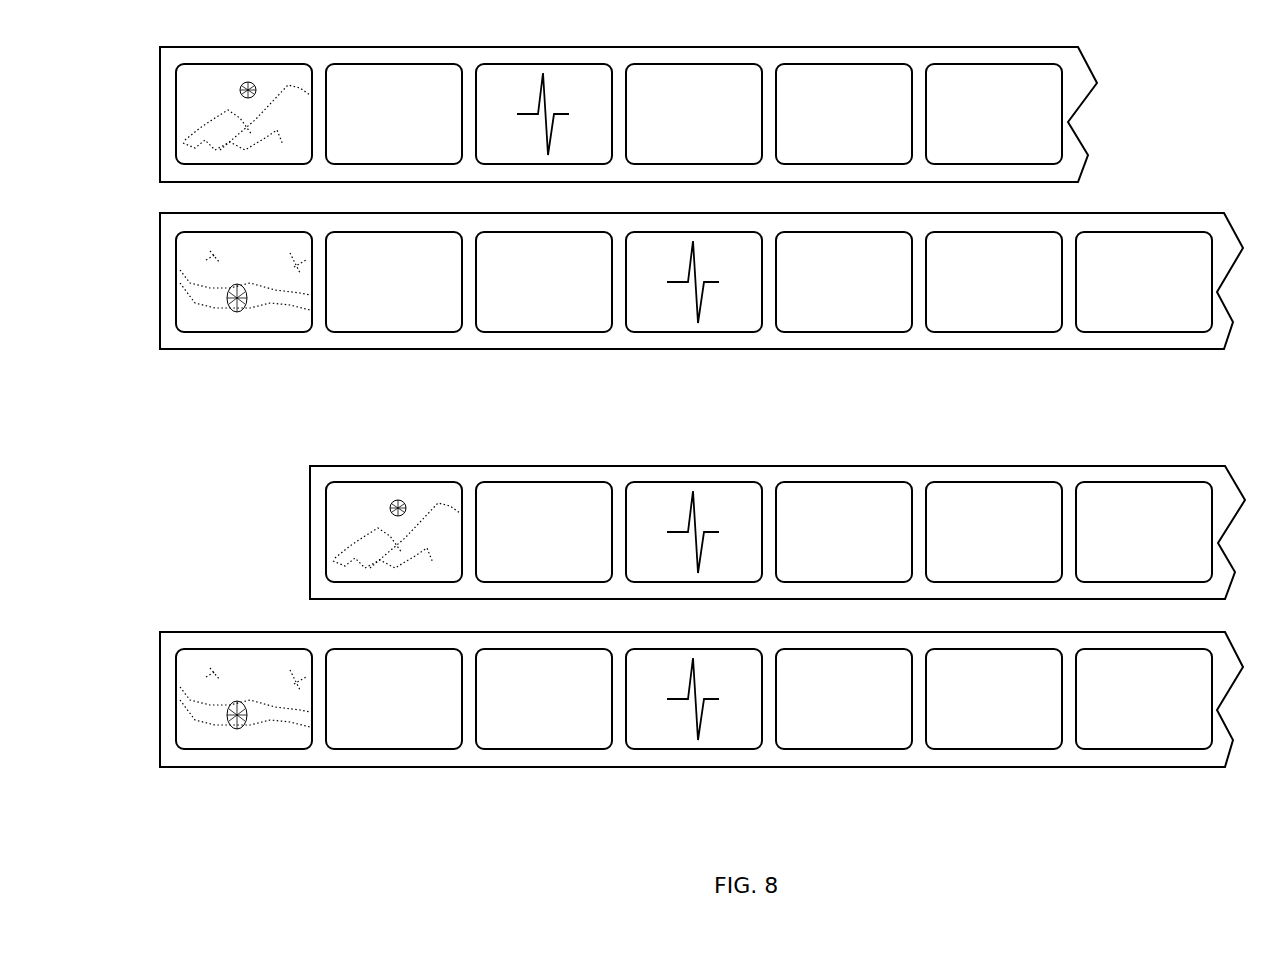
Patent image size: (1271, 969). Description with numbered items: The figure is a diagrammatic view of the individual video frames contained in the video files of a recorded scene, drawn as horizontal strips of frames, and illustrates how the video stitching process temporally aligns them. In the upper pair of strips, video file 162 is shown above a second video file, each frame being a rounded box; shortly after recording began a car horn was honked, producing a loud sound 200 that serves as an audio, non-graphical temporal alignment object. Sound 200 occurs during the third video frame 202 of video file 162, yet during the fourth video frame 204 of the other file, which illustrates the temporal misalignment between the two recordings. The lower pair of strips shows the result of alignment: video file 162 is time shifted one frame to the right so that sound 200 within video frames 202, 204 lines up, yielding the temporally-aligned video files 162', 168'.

The video file 162 is at (609, 114).
The temporally-aligned video file 162' is at (758, 532).
The temporally-aligned video file 168' is at (682, 699).
The sound 200 is at (534, 106).
The third video frame 202 is at (619, 323).
The fourth video frame 204 is at (694, 490).